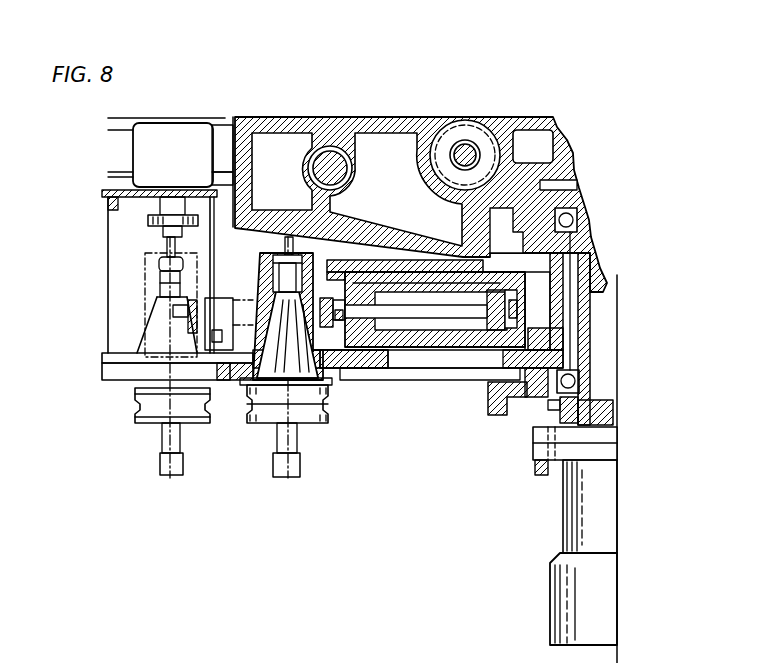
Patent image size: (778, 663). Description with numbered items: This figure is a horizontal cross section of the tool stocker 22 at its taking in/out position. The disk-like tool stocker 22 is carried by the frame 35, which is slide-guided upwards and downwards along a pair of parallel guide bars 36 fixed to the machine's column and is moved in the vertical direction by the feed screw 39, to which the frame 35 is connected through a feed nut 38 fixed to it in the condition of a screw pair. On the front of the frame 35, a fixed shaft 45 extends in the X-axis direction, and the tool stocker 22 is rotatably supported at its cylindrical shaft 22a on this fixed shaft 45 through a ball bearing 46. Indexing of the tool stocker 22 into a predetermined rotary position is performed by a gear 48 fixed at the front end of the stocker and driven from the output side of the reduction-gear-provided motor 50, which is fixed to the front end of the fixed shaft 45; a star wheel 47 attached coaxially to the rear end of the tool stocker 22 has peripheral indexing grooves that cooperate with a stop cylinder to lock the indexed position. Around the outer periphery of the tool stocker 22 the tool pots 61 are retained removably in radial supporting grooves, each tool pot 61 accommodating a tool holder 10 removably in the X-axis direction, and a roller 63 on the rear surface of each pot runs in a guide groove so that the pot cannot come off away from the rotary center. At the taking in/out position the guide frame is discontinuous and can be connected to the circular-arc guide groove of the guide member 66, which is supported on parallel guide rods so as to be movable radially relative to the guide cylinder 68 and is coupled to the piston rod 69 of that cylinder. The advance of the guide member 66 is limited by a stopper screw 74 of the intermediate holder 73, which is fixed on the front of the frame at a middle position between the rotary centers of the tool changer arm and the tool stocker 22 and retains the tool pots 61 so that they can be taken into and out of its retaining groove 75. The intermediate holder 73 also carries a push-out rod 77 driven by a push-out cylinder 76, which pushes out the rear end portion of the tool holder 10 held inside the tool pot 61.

The tool holder 10 is at (148, 312).
The tool stocker 22 is at (452, 362).
The cylindrical shaft 22a is at (551, 331).
The frame 35 is at (280, 117).
The guide bars 36 is at (322, 170).
The feed nut 38 is at (476, 124).
The feed screw 39 is at (461, 148).
The fixed shaft 45 is at (604, 418).
The ball bearing 46 is at (580, 218).
The star wheel 47 is at (526, 207).
The gear 48 is at (500, 412).
The reduction-gear-provided motor 50 is at (553, 612).
The tool pot 61 is at (262, 290).
The roller 63 is at (342, 368).
The guide member 66 is at (325, 402).
The guide cylinder 68 is at (410, 266).
The piston rod 69 is at (432, 320).
The intermediate holder 73 is at (108, 320).
The stopper screw 74 is at (212, 302).
The retaining groove 75 is at (104, 368).
The push-out cylinder 76 is at (140, 155).
The push-out rod 77 is at (166, 228).